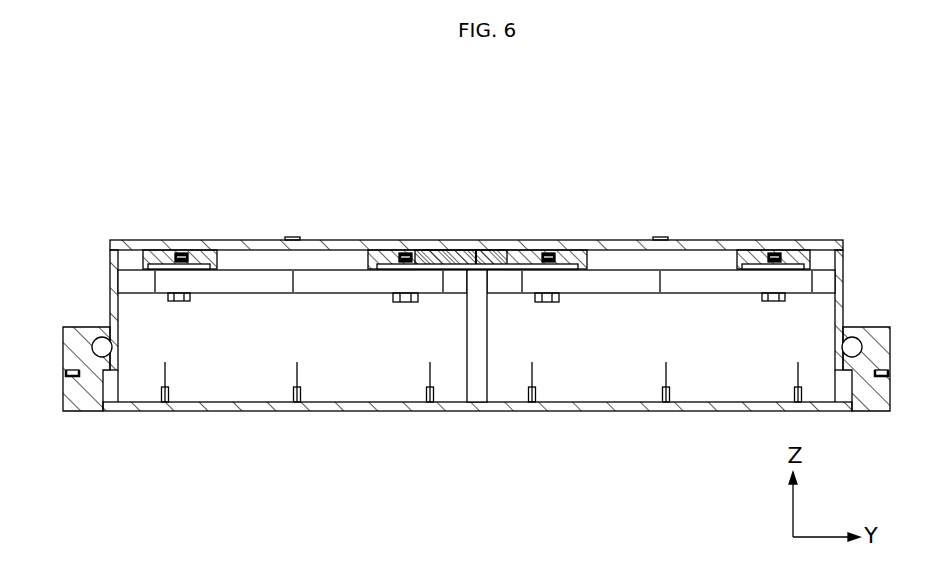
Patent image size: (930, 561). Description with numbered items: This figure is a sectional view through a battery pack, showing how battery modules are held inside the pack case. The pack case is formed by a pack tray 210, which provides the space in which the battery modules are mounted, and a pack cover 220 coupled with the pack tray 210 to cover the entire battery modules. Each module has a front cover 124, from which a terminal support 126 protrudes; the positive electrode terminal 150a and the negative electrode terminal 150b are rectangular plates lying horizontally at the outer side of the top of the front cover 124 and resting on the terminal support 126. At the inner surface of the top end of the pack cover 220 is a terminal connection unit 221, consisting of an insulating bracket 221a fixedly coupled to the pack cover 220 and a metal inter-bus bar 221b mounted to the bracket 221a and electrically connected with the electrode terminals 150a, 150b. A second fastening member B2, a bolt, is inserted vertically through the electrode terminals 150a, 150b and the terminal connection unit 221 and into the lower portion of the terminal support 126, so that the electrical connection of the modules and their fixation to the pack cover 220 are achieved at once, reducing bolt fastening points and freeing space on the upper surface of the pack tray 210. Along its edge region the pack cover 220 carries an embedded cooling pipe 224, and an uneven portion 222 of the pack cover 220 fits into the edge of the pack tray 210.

The front cover 124 is at (341, 402).
The terminal support 126 is at (252, 282).
The positive electrode terminal 150a is at (393, 257).
The negative electrode terminal 150b is at (569, 257).
The pack tray 210 is at (473, 411).
The pack cover 220 is at (633, 240).
The terminal connection unit 221 is at (477, 209).
The insulating bracket 221a is at (438, 258).
The inter-bus bar 221b is at (531, 234).
The uneven portion 222 is at (73, 371).
The cooling pipe 224 is at (102, 347).
The second fastening member B2 is at (406, 303).